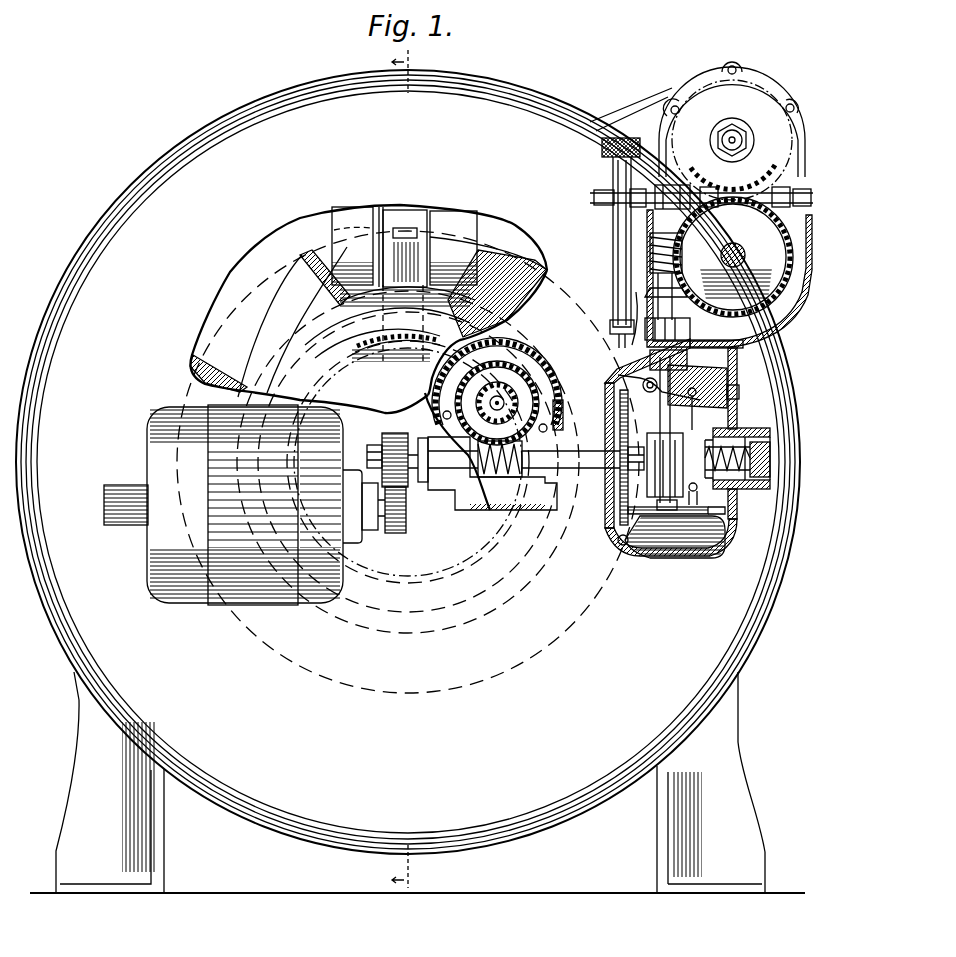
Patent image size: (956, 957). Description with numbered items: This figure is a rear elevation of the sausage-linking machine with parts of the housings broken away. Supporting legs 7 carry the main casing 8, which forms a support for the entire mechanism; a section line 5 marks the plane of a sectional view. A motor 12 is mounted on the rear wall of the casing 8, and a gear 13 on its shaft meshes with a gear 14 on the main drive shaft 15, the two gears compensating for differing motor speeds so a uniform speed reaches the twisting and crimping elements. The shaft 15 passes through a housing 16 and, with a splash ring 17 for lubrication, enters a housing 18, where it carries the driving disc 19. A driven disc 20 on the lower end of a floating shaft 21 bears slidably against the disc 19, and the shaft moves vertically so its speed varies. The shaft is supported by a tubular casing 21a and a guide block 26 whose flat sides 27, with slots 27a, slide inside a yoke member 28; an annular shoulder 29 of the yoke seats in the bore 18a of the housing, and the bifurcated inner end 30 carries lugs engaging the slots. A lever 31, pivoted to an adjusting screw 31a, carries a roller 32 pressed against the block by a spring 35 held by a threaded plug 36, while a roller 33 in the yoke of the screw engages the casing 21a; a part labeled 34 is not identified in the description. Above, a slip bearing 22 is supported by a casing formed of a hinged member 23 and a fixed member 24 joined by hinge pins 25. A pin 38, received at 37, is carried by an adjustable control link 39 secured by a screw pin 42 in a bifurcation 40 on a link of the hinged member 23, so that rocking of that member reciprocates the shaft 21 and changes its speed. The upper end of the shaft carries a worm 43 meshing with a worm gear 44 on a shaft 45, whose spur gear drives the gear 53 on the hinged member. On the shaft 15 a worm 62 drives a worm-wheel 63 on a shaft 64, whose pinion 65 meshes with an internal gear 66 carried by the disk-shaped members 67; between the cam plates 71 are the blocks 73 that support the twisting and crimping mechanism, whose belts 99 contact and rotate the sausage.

The section line 5 is at (408, 470).
The supporting legs 7 is at (152, 846).
The main casing 8 is at (527, 823).
The motor 12 is at (244, 505).
The gear 13 is at (397, 534).
The gear 14 is at (384, 441).
The main drive shaft 15 is at (556, 505).
The housing 16 is at (520, 375).
The splash ring 17 is at (492, 512).
The housing 18 is at (660, 560).
The bore 18a is at (745, 432).
The driving disc 19 is at (620, 418).
The driven disc 20 is at (700, 552).
The shaft 21 is at (623, 546).
The tubular casing 21a is at (620, 400).
The slip bearing 22 is at (690, 358).
The hinged member 23 is at (764, 78).
The fixed member 24 is at (805, 322).
The hinge members 25 is at (705, 180).
The guide block 26 is at (630, 466).
The flat sides 27 is at (700, 513).
The slots 27a is at (712, 545).
The yoke member 28 is at (738, 490).
The annular shoulder 29 is at (735, 432).
The bifurcation 30 is at (658, 440).
The lever 31 is at (697, 393).
The adjusting screw 31a is at (740, 392).
The roller 32 is at (698, 490).
The roller 33 is at (640, 380).
The cam 34 is at (727, 380).
The spring 35 is at (768, 458).
The screw threaded plug 36 is at (765, 478).
The pin receiving portion 37 is at (692, 333).
The pin 38 is at (614, 305).
The adjustable control link 39 is at (620, 240).
The bifurcation 40 is at (612, 194).
The screw pin 42 is at (602, 203).
The worm 43 is at (652, 262).
The worm gear 44 is at (733, 257).
The shaft 45 is at (721, 258).
The gear 53 is at (732, 129).
The worm 62 is at (500, 470).
The worm-wheel 63 is at (505, 360).
The shaft 64 is at (515, 400).
The pinion 65 is at (441, 451).
The internal gear 66 is at (390, 323).
The disk shaped members 67 is at (497, 233).
The cam plates 71 is at (497, 293).
The blocks 73 is at (418, 244).
The belts 99 is at (357, 222).